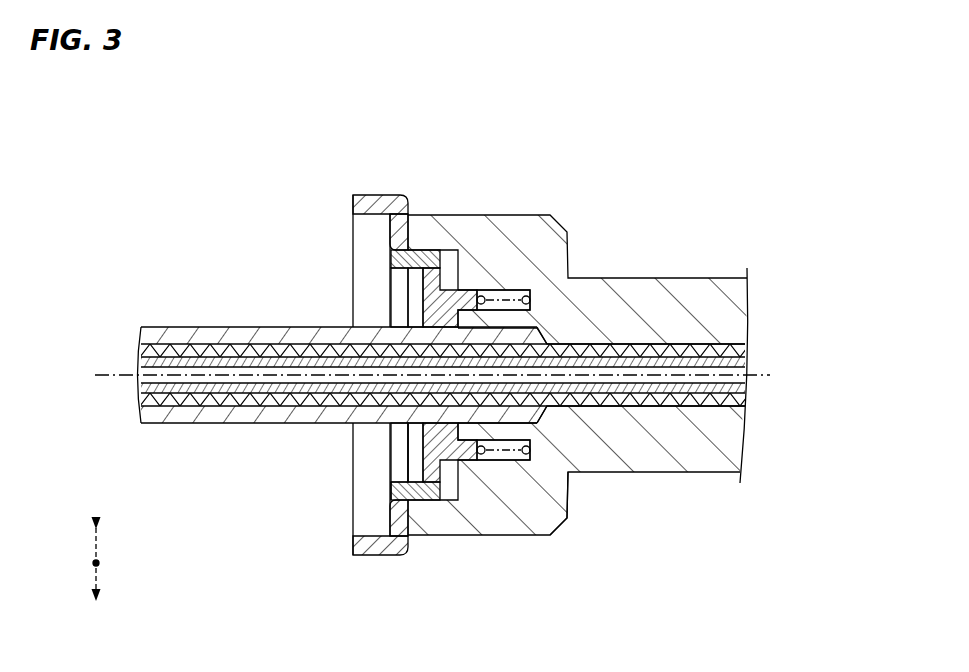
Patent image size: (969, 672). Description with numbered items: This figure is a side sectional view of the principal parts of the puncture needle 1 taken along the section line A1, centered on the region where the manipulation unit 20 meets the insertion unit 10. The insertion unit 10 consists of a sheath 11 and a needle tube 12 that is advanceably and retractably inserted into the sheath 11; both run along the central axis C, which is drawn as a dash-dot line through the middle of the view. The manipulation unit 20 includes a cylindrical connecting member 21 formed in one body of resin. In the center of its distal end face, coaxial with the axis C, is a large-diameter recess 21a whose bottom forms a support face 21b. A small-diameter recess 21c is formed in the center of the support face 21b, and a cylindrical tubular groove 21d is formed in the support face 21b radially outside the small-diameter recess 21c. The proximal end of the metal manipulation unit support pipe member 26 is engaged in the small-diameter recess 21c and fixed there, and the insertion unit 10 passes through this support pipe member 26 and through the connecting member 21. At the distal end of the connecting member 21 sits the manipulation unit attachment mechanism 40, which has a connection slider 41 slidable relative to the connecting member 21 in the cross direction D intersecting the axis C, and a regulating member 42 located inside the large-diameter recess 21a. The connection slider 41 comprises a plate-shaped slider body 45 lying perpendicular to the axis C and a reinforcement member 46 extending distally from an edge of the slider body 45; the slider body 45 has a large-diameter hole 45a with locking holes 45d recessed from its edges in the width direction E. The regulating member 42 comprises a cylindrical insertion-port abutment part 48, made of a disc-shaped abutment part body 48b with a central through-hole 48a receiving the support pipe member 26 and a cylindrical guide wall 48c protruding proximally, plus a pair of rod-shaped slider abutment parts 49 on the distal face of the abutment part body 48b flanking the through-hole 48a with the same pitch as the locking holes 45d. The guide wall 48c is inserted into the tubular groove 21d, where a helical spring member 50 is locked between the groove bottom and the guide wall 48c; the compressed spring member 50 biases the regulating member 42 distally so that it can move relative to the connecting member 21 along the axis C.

The puncture needle 1 is at (180, 138).
The insertion unit 10 is at (222, 252).
The sheath 11 is at (182, 350).
The needle tube 12 is at (231, 362).
The manipulation unit support pipe member 26 is at (178, 424).
The manipulation unit 20 is at (739, 130).
The connecting member 21 is at (576, 426).
The large-diameter recess 21a is at (443, 507).
The support face 21b is at (454, 504).
The small-diameter recess 21c is at (516, 432).
The tubular groove 21d is at (557, 521).
The manipulation unit attachment mechanism 40 is at (444, 116).
The connection slider 41 is at (382, 117).
The regulating member 42 is at (527, 164).
The slider body 45 is at (334, 334).
The large-diameter hole 45a is at (392, 473).
The locking hole 45d is at (390, 258).
The reinforcement member 46 is at (366, 196).
The insertion-port abutment part 48 is at (390, 322).
The through-hole 48a is at (396, 408).
The abutment part body 48b is at (428, 296).
The guide wall 48c is at (450, 310).
The slider abutment part 49 is at (414, 258).
The spring member 50 is at (524, 290).
The section line A1 is at (398, 186).
The axis C is at (96, 378).
The cross direction D is at (100, 563).
The width direction E is at (96, 585).